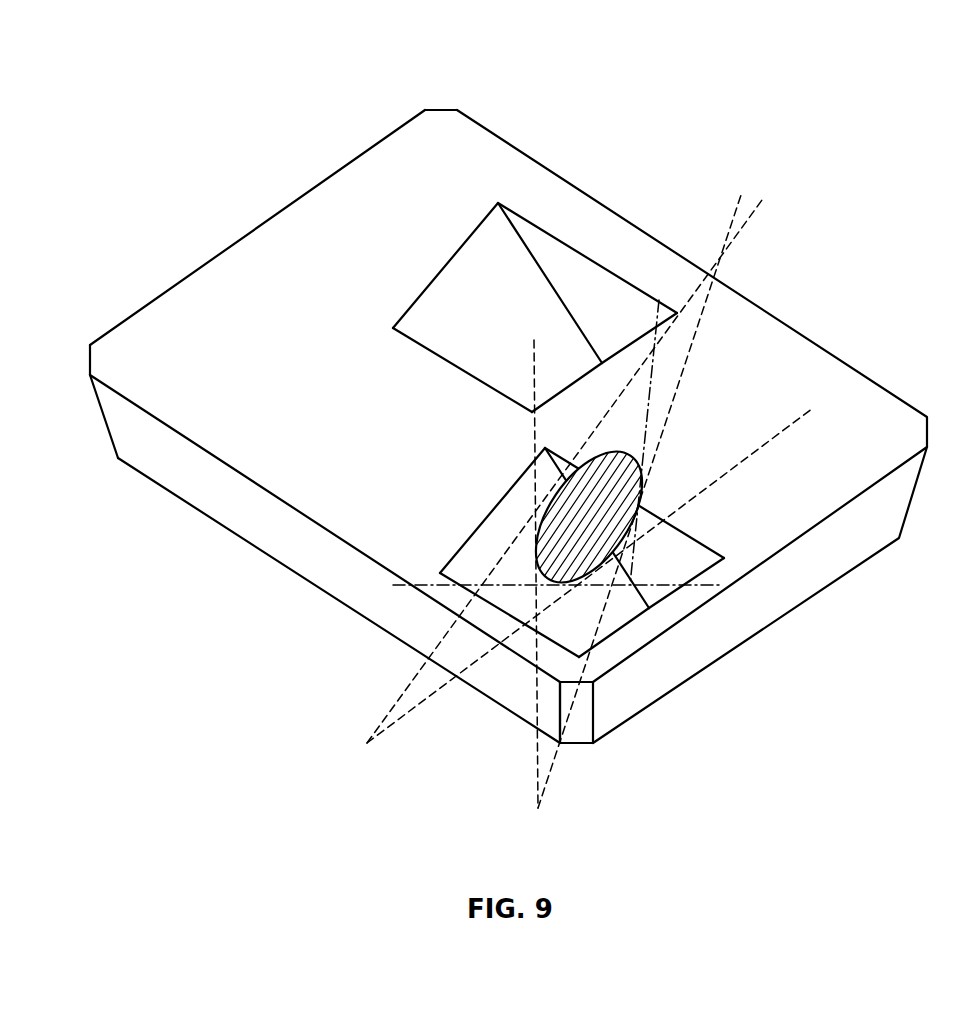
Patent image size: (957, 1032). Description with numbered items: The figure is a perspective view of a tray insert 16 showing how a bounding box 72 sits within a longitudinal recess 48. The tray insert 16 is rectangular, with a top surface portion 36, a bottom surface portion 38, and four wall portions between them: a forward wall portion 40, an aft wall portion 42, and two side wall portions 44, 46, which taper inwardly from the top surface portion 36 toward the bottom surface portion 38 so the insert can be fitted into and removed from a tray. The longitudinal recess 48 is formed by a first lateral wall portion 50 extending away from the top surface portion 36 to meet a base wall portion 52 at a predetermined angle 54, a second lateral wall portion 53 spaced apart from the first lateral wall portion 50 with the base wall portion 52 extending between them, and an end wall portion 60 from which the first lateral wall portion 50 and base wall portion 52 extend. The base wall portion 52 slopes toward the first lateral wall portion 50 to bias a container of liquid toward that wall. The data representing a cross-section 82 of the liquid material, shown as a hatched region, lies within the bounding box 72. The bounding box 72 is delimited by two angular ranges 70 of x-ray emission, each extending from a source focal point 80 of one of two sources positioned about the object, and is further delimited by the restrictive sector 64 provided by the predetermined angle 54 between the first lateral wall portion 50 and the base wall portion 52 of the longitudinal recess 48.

The tray insert 16 is at (457, 110).
The top surface portion 36 is at (255, 327).
The bottom surface portion 38 is at (273, 560).
The forward wall portion 40 is at (767, 608).
The aft wall portion 42 is at (267, 222).
The side wall portion 44 is at (180, 483).
The side wall portion 46 is at (793, 328).
The longitudinal recess 48 is at (552, 236).
The first lateral wall portion 50 is at (590, 283).
The base wall portion 52 is at (488, 238).
The second lateral wall portion 53 is at (443, 365).
The predetermined angle 54 is at (640, 563).
The end wall portion 60 is at (618, 632).
The restrictive sector 64 is at (635, 593).
The angular range 70 is at (380, 725).
The bounding box 72 is at (653, 357).
The source focal point 80 is at (365, 745).
The cross-section of the liquid material 82 is at (620, 453).